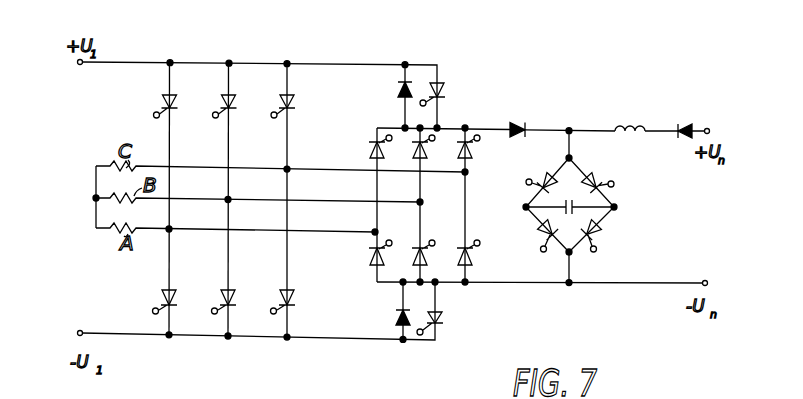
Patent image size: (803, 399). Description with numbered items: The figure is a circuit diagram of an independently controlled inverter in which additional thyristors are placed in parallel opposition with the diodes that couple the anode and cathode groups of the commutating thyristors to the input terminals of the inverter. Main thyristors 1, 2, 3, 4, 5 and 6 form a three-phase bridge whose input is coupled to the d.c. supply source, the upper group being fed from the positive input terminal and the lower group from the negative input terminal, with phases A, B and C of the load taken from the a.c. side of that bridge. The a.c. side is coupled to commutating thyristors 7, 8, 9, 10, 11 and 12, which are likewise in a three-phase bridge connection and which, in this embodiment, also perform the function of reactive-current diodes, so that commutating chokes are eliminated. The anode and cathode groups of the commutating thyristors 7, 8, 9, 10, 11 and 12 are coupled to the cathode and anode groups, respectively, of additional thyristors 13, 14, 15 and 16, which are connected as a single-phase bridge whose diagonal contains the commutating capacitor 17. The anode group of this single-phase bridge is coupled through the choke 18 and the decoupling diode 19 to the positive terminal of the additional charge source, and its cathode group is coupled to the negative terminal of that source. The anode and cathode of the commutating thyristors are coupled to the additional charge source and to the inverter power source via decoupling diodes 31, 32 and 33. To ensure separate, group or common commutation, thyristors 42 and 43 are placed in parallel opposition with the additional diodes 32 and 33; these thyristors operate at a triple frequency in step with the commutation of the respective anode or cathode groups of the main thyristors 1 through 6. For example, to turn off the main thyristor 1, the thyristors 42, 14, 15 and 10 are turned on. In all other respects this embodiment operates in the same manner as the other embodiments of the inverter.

The main thyristor 1 is at (161, 103).
The main thyristor 2 is at (220, 103).
The main thyristor 3 is at (279, 103).
The main thyristor 4 is at (153, 298).
The main thyristor 5 is at (213, 298).
The main thyristor 6 is at (273, 298).
The commutating thyristor 7 is at (365, 152).
The commutating thyristor 8 is at (415, 152).
The commutating thyristor 9 is at (459, 152).
The commutating thyristor 10 is at (370, 261).
The commutating thyristor 11 is at (413, 261).
The commutating thyristor 12 is at (459, 261).
The additional thyristor 13 is at (542, 174).
The additional thyristor 14 is at (592, 174).
The additional thyristor 15 is at (538, 234).
The additional thyristor 16 is at (600, 234).
The commutating capacitor 17 is at (576, 198).
The choke 18 is at (629, 111).
The decoupling diode 19 is at (684, 122).
The decoupling diode 31 is at (516, 120).
The decoupling diode 32 is at (398, 96).
The decoupling diode 33 is at (396, 317).
The thyristor 42 is at (447, 82).
The thyristor 43 is at (447, 311).